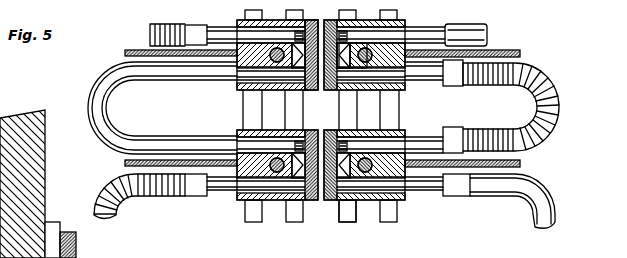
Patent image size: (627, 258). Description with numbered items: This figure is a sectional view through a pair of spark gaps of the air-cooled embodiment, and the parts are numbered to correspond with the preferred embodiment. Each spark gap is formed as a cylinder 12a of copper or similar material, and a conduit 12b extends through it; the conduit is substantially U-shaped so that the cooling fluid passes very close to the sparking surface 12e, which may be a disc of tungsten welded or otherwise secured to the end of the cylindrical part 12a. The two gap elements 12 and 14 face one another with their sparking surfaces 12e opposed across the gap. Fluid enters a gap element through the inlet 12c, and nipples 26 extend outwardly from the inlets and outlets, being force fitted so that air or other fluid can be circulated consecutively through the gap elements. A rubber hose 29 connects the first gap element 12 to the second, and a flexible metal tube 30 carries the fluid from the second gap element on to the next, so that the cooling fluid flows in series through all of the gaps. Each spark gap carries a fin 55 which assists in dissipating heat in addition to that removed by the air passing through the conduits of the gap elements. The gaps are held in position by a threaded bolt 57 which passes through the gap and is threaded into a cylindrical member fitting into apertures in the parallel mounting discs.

The first gap element 12 is at (355, 93).
The cylinder 12a is at (372, 92).
The conduit 12b is at (382, 92).
The inlet 12c is at (436, 25).
The sparking surface 12e is at (324, 91).
The gap element 14 is at (258, 91).
The nipple 26 is at (237, 26).
The rubber hose 29 is at (97, 85).
The flexible metal tube 30 is at (146, 194).
The fin 55 is at (519, 53).
The threaded bolt 57 is at (364, 200).